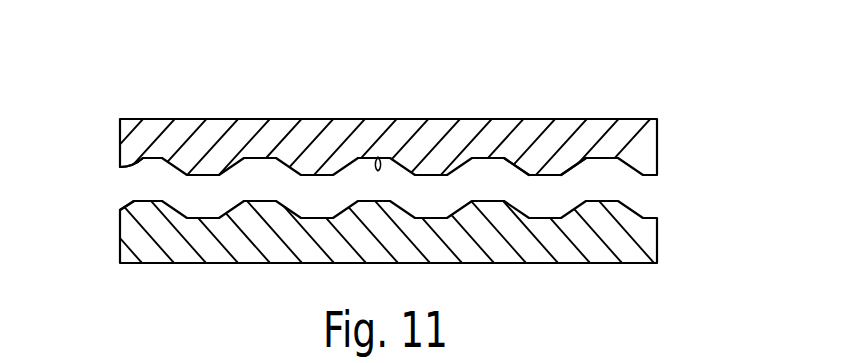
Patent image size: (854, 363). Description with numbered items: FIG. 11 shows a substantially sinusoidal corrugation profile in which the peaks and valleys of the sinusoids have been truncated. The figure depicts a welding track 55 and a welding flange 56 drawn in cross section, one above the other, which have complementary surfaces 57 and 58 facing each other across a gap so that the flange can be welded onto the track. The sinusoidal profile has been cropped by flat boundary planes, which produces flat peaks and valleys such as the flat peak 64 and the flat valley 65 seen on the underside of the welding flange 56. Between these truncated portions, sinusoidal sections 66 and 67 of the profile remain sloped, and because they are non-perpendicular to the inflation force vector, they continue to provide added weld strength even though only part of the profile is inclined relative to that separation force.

The welding track 55 is at (216, 248).
The welding flange 56 is at (213, 130).
The complementary surface 57 is at (140, 199).
The complementary surface 58 is at (121, 167).
The flat peak 64 is at (378, 158).
The flat valley 65 is at (432, 174).
The sinusoidal section 66 is at (522, 170).
The sinusoidal section 67 is at (572, 166).